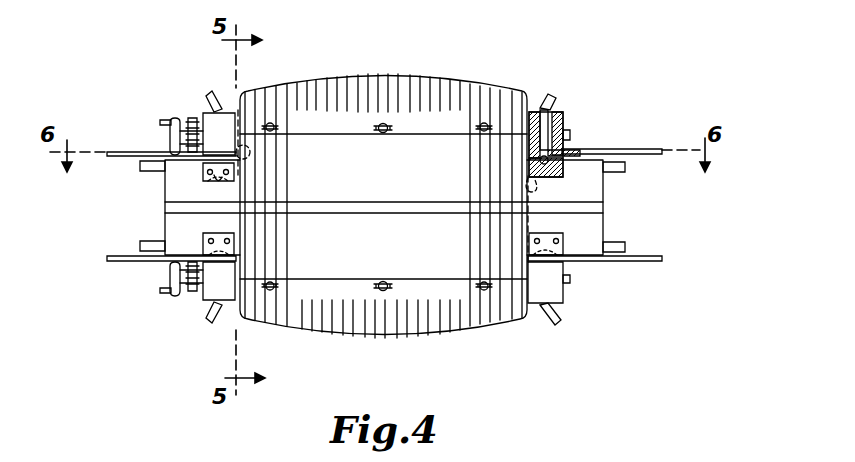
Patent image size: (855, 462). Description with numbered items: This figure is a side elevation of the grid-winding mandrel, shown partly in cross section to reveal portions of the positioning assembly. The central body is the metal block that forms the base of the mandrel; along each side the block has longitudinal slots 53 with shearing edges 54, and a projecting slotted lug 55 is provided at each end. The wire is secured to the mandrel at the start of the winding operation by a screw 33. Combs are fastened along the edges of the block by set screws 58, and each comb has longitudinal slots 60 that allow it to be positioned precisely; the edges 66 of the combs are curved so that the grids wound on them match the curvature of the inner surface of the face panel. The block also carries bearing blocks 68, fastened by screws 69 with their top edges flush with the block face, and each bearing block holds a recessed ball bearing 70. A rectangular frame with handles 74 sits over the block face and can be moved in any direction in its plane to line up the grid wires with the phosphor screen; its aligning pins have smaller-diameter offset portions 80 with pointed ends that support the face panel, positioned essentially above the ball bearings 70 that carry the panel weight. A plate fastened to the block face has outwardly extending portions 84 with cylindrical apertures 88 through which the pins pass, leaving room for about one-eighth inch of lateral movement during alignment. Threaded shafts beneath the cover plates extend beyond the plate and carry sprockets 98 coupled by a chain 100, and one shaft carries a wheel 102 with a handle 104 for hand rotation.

The screw 33 is at (250, 152).
The longitudinal slots 53 is at (395, 208).
The shearing edges 54 is at (426, 200).
The projecting slotted lug 55 is at (150, 171).
The set screws 58 is at (386, 131).
The longitudinal slots 60 is at (372, 130).
The edges of the combs 66 is at (450, 72).
The bearing blocks 68 is at (203, 175).
The screws 69 is at (216, 178).
The ball bearing 70 is at (565, 150).
The handles 74 is at (118, 157).
The offset portions 80 is at (212, 102).
The outwardly extending portions 84 is at (563, 296).
The cylindrical apertures 88 is at (557, 110).
The sprockets 98 is at (200, 292).
The chain 100 is at (190, 118).
The wheel 102 is at (172, 139).
The handle 104 is at (162, 120).